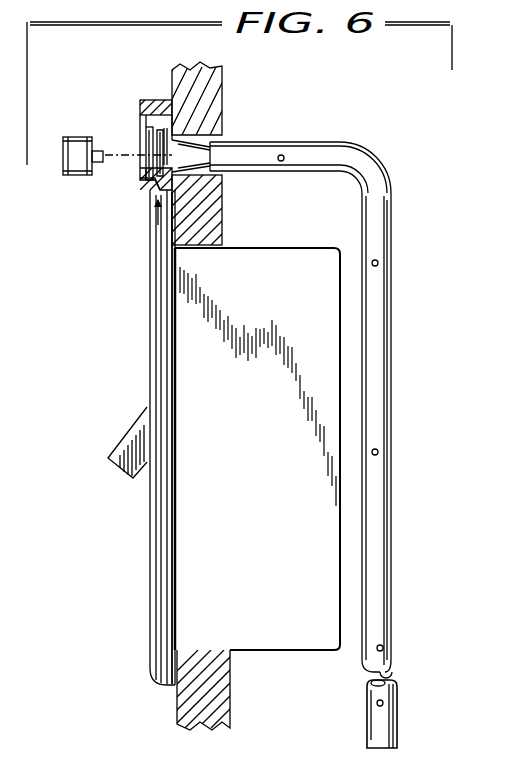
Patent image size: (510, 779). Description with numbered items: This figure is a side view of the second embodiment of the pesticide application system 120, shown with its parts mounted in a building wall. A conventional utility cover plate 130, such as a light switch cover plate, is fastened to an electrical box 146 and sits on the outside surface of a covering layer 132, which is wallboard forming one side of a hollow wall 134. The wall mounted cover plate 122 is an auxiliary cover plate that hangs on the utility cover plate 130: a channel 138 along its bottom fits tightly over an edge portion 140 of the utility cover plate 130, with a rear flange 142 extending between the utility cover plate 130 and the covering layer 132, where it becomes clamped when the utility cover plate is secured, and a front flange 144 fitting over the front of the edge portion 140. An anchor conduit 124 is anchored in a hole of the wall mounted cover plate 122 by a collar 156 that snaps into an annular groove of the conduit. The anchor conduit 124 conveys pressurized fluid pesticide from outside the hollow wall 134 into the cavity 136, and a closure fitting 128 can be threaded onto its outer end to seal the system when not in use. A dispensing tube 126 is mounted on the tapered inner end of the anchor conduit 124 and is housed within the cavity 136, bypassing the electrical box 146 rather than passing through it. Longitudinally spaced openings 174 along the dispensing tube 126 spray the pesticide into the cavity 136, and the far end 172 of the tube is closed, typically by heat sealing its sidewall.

The pesticide application system 120 is at (313, 92).
The wall mounted cover plate 122 is at (139, 86).
The anchor conduit 124 is at (137, 168).
The dispensing tube 126 is at (393, 184).
The closure fitting 128 is at (71, 133).
The utility cover plate 130 is at (152, 572).
The covering layer 132 is at (222, 82).
The hollow wall 134 is at (166, 727).
The cavity 136 is at (330, 236).
The channel 138 is at (147, 258).
The edge portion 140 is at (143, 228).
The rear flange 142 is at (173, 213).
The front flange 144 is at (138, 206).
The electrical box 146 is at (272, 492).
The collar 156 is at (228, 142).
The far end 172 is at (368, 740).
The openings 174 is at (284, 156).